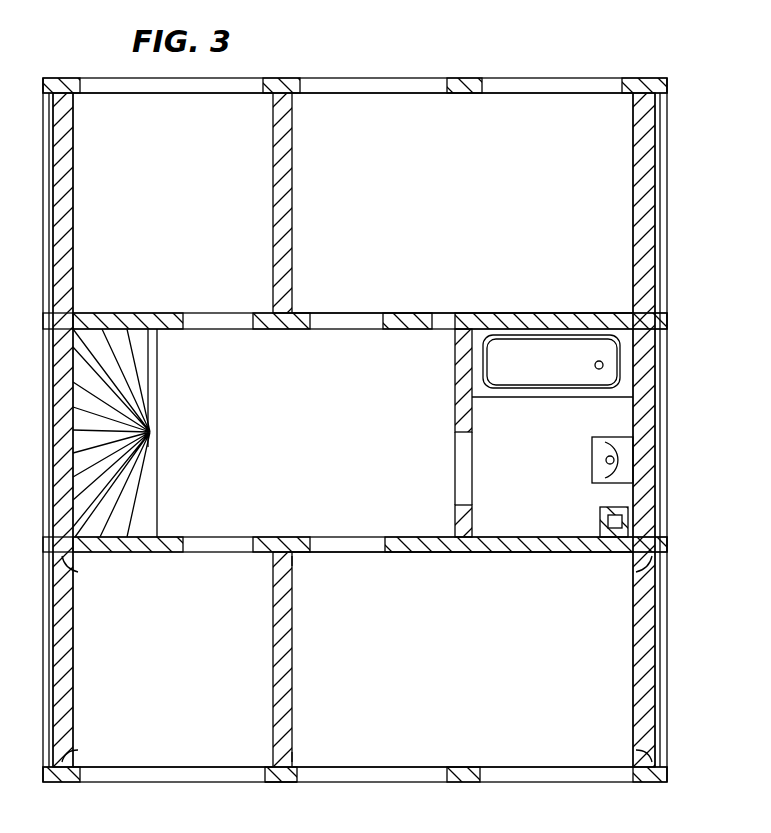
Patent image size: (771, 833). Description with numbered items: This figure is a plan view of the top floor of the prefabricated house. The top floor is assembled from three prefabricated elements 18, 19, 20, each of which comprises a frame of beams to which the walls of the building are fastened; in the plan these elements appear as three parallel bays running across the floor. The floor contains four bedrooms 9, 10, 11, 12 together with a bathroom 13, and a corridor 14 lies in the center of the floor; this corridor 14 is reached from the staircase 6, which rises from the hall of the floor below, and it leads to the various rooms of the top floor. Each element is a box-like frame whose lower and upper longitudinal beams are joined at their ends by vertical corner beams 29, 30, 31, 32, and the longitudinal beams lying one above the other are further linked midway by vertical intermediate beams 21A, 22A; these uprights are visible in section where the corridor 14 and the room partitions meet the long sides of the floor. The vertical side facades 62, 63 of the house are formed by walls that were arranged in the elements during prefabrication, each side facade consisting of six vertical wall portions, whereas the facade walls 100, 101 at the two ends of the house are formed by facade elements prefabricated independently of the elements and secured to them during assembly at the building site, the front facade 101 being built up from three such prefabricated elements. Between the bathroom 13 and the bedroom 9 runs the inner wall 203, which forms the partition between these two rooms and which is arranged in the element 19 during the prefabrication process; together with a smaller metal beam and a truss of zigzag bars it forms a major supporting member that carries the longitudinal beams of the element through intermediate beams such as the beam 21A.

The staircase 6 is at (147, 494).
The bedroom 9 is at (437, 753).
The bedroom 10 is at (197, 753).
The bedroom 11 is at (241, 104).
The bedroom 12 is at (522, 106).
The bathroom 13 is at (483, 434).
The corridor 14 is at (379, 522).
The element 18 is at (288, 783).
The element 19 is at (371, 313).
The element 20 is at (399, 67).
The vertical intermediate beam 21A is at (292, 762).
The vertical intermediate beam 22A is at (285, 553).
The vertical beam 29 is at (74, 752).
The vertical beam 30 is at (74, 574).
The vertical beam 31 is at (636, 750).
The vertical beam 32 is at (634, 572).
The side facade 62 is at (46, 460).
The side facade 63 is at (667, 437).
The facade wall 100 is at (640, 78).
The front facade 101 is at (605, 783).
The inner wall 203 is at (573, 296).